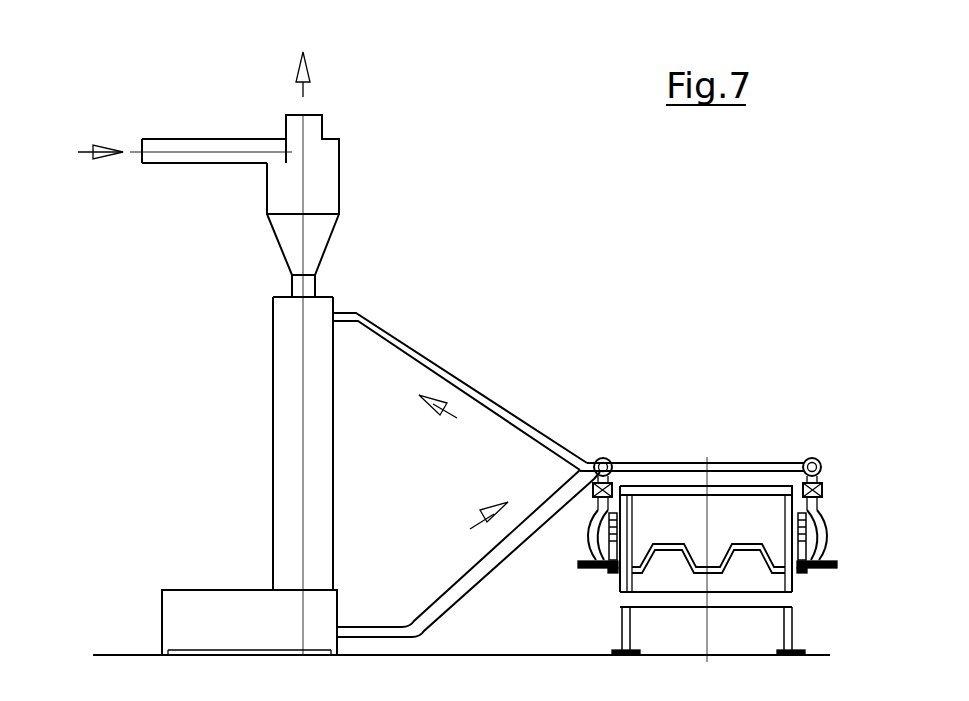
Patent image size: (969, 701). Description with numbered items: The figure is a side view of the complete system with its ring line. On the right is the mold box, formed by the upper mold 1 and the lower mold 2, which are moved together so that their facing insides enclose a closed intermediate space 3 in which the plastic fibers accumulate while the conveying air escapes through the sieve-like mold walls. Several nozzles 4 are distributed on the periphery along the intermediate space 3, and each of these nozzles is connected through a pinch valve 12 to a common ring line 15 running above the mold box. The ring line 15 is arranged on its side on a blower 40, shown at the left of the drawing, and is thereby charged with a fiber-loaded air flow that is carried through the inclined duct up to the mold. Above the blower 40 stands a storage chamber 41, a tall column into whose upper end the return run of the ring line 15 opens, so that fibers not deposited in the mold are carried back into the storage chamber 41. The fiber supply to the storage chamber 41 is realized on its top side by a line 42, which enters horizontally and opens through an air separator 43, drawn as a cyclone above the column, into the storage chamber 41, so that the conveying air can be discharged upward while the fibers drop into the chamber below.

The upper mold 1 is at (743, 508).
The lower mold 2 is at (788, 593).
The intermediate space 3 is at (659, 548).
The nozzles 4 is at (608, 573).
The pinch valves 12 is at (822, 490).
The ring line 15 is at (642, 464).
The blower 40 is at (170, 625).
The storage chamber 41 is at (283, 430).
The line 42 is at (187, 145).
The air separator 43 is at (323, 173).